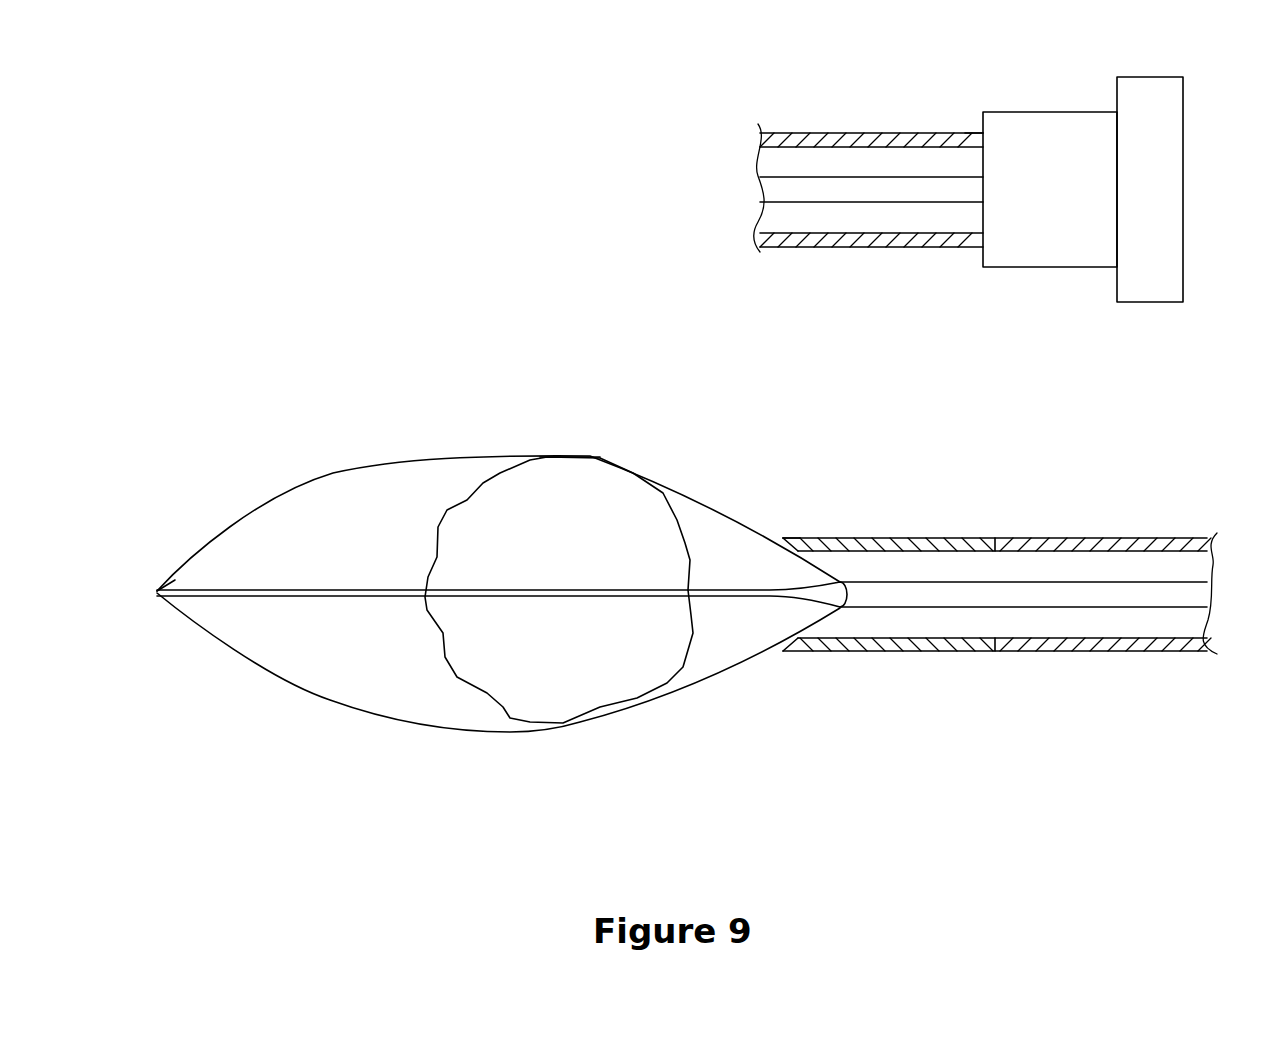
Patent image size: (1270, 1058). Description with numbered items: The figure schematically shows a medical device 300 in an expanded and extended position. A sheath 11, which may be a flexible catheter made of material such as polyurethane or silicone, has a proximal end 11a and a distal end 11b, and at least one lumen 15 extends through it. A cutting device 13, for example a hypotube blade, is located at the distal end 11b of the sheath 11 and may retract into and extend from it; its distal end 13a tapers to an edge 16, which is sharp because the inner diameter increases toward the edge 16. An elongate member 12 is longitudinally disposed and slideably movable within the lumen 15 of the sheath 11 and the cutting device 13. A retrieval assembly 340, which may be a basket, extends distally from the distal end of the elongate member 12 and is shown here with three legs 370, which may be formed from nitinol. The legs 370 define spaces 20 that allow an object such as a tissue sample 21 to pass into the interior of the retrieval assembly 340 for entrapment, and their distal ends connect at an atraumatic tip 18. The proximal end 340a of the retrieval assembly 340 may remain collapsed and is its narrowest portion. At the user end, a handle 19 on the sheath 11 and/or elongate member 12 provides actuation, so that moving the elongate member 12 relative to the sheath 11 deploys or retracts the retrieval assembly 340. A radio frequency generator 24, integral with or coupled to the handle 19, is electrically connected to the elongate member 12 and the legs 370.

The sheath 11 is at (985, 352).
The proximal end 11a is at (985, 91).
The distal end 11b is at (1023, 539).
The elongate member 12 is at (682, 392).
The cutting device 13 is at (896, 539).
The distal end 13a is at (765, 682).
The lumen 15 is at (883, 623).
The edge 16 is at (801, 482).
The tip 18 is at (147, 552).
The handle 19 is at (1050, 228).
The spaces 20 is at (498, 554).
The tissue sample 21 is at (556, 396).
The radio frequency generator 24 is at (1159, 228).
The medical device 300 is at (345, 760).
The retrieval assembly 340 is at (697, 712).
The proximal end 340a is at (830, 682).
The legs 370 is at (583, 559).